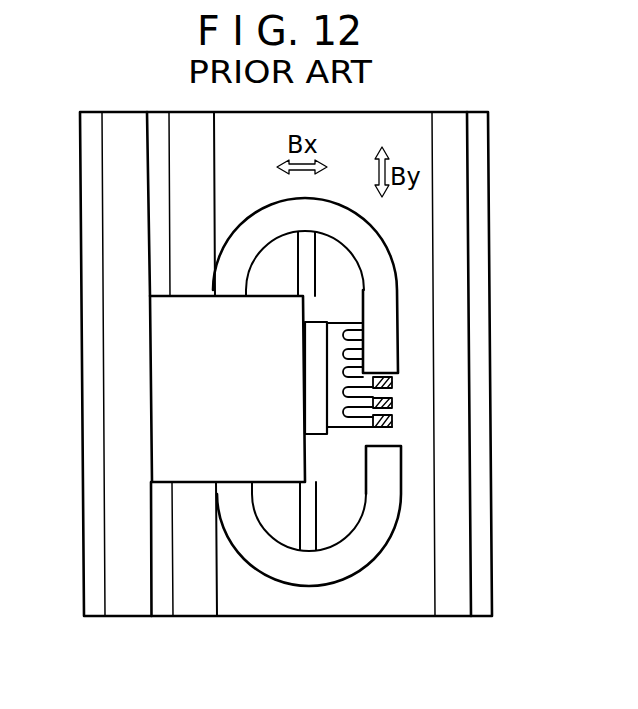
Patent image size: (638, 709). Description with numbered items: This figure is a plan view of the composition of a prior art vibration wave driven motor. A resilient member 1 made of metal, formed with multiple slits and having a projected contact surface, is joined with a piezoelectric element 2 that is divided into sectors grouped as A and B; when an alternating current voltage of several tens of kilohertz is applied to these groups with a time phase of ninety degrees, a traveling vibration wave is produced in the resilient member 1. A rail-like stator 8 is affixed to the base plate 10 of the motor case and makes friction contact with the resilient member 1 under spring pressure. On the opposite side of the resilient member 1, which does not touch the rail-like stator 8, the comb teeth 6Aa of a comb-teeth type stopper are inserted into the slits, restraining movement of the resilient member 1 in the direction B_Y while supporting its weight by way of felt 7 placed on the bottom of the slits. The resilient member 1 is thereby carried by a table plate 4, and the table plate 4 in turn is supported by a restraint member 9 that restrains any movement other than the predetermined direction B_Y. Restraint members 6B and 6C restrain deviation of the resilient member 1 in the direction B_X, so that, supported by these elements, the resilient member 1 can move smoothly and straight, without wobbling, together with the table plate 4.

The resilient member 1 is at (398, 285).
The piezoelectric element 2 is at (390, 327).
The table plate 4 is at (162, 417).
The comb teeth 6Aa is at (363, 418).
The restraint member 6B is at (320, 525).
The restraint member 6C is at (307, 267).
The felt 7 is at (392, 404).
The rail-like stator 8 is at (195, 607).
The restraint member 9 is at (457, 510).
The base plate 10 is at (483, 558).